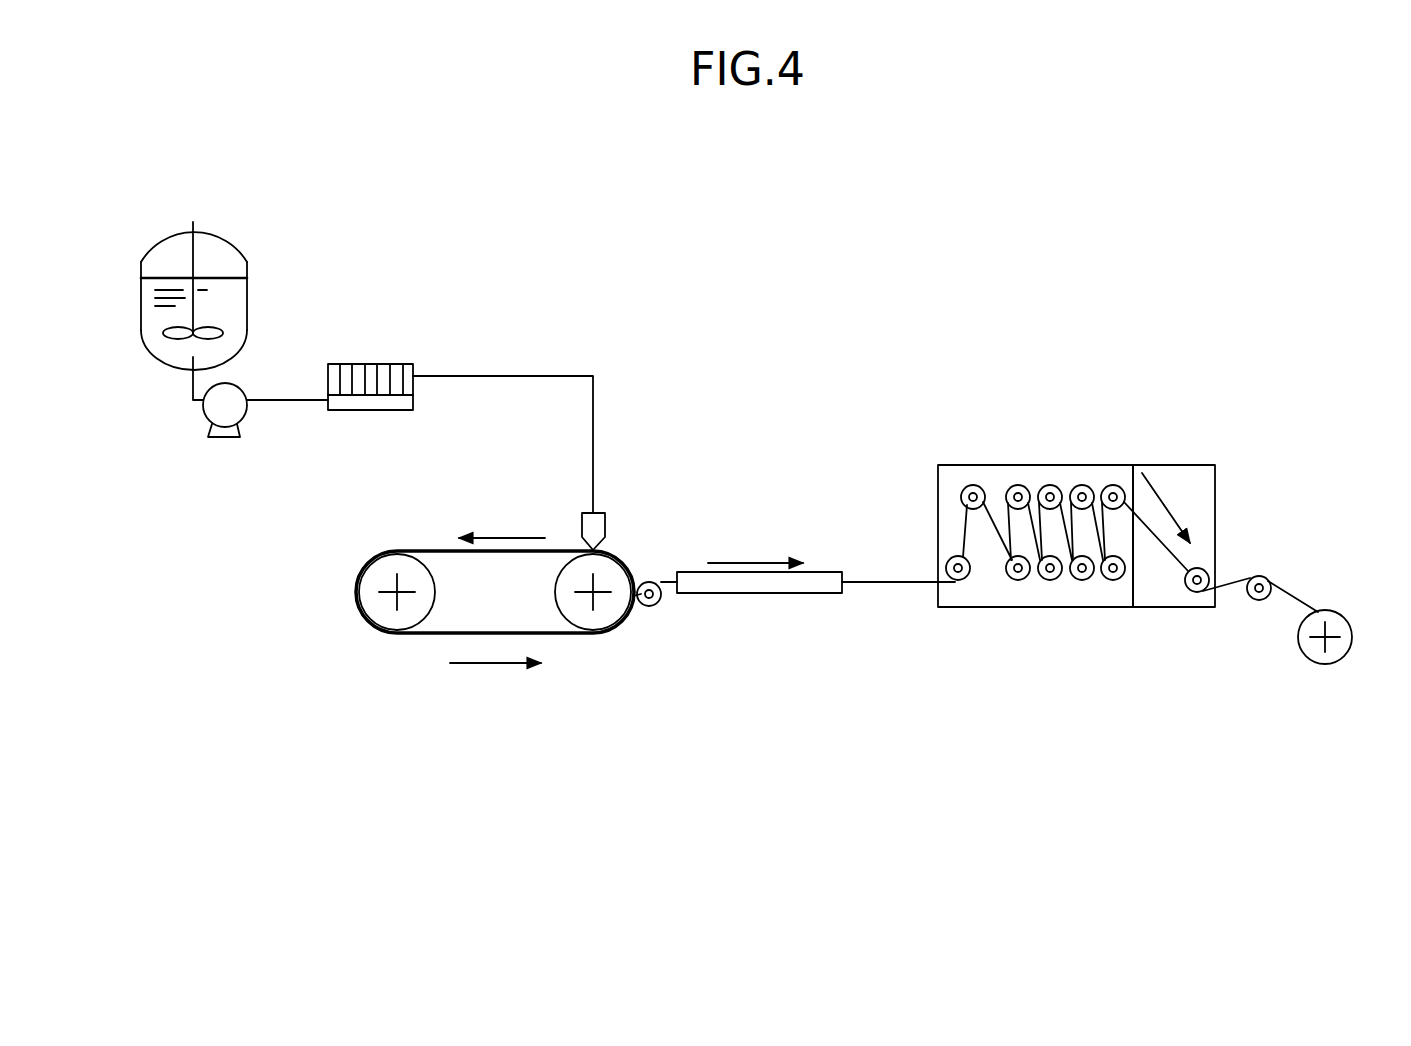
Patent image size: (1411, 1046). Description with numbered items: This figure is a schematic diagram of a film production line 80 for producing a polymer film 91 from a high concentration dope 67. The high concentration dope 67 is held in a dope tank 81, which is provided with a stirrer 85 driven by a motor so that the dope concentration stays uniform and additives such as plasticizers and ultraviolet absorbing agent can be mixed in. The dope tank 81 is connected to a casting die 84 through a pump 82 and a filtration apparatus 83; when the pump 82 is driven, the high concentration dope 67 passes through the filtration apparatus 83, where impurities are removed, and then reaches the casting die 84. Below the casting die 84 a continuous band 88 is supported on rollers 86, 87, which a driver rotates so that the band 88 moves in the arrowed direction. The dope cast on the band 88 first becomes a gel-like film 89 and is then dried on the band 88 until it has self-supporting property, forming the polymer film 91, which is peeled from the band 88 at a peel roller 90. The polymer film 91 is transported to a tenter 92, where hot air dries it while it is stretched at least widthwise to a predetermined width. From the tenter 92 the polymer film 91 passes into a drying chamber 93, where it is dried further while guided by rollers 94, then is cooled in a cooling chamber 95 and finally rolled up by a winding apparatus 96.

The film production line 80 is at (684, 323).
The dope tank 81 is at (158, 244).
The high concentration dope 67 is at (223, 302).
The stirrer 85 is at (172, 339).
The pump 82 is at (212, 438).
The filtration apparatus 83 is at (373, 363).
The casting die 84 is at (582, 522).
The roller 86 is at (380, 609).
The roller 87 is at (610, 612).
The band 88 is at (623, 560).
The gel-like film 89 is at (437, 635).
The peel roller 90 is at (657, 603).
The polymer film 91 is at (890, 582).
The tenter 92 is at (830, 570).
The drying chamber 93 is at (1037, 608).
The rollers 94 is at (1052, 486).
The cooling chamber 95 is at (1157, 608).
The winding apparatus 96 is at (1343, 647).